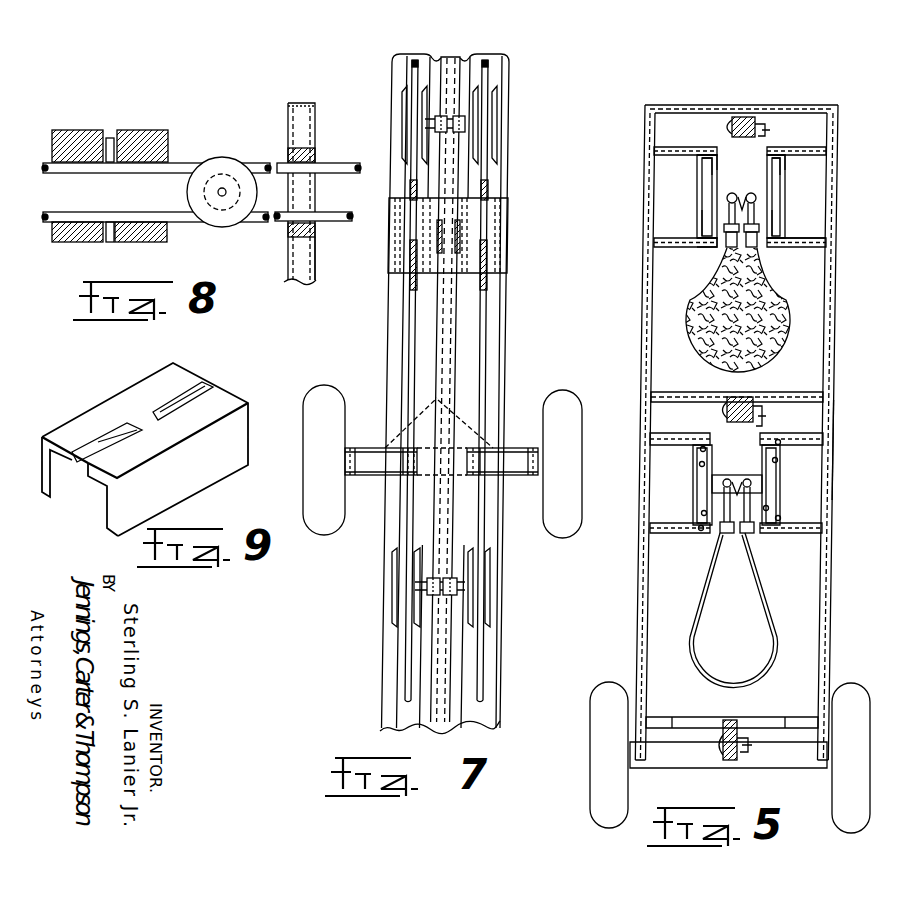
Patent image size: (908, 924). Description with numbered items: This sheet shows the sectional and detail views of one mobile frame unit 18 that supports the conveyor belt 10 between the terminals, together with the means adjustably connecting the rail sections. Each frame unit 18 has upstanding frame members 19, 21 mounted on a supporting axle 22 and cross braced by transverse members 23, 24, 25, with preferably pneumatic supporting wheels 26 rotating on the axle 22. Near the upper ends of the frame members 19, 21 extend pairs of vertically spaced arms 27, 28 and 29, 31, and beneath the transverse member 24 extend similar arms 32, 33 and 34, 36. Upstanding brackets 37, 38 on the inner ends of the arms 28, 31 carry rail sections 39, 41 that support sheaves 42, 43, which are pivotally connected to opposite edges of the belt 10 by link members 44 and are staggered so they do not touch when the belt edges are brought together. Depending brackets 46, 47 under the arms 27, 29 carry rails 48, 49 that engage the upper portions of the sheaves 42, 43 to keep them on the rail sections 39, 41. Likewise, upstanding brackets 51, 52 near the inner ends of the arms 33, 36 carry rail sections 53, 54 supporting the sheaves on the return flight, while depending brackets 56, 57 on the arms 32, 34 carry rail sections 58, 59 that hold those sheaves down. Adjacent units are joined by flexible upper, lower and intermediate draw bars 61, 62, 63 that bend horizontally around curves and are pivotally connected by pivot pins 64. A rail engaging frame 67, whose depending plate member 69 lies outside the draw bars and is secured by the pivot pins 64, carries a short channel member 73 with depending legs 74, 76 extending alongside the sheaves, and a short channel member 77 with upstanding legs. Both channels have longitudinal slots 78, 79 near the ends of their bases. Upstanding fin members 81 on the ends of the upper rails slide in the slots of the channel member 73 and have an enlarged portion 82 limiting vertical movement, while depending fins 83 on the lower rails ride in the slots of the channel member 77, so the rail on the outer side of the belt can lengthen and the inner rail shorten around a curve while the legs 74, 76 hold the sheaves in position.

In FIG. 5, the conveyor belt 10 is at (779, 294).
In FIG. 7, the mobile frame unit 18 is at (517, 446).
In FIG. 5, the mobile frame unit 18 is at (830, 453).
In FIG. 8, the upstanding frame member 19 is at (310, 283).
In FIG. 7, the upstanding frame member 19 is at (351, 477).
In FIG. 5, the upstanding frame member 19 is at (649, 370).
In FIG. 7, the upstanding frame member 21 is at (537, 478).
In FIG. 5, the upstanding frame member 21 is at (828, 364).
In FIG. 5, the supporting axle 22 is at (777, 750).
In FIG. 8, the transverse member 23 is at (312, 108).
In FIG. 5, the transverse member 23 is at (836, 110).
In FIG. 5, the transverse member 24 is at (815, 398).
In FIG. 5, the transverse member 25 is at (658, 717).
In FIG. 7, the supporting wheel 26 is at (326, 534).
In FIG. 5, the supporting wheel 26 is at (860, 702).
In FIG. 5, the arm 27 is at (663, 160).
In FIG. 8, the arm 28 is at (314, 232).
In FIG. 5, the arm 28 is at (665, 240).
In FIG. 5, the arm 29 is at (820, 152).
In FIG. 5, the arm 31 is at (810, 245).
In FIG. 5, the arm 32 is at (667, 446).
In FIG. 5, the arm 33 is at (660, 526).
In FIG. 5, the arm 34 is at (818, 434).
In FIG. 5, the arm 36 is at (808, 523).
In FIG. 8, the upstanding bracket 37 is at (312, 227).
In FIG. 5, the upstanding bracket 37 is at (697, 243).
In FIG. 5, the upstanding bracket 38 is at (813, 237).
In FIG. 8, the rail section 39 is at (43, 219).
In FIG. 5, the rail section 39 is at (706, 218).
In FIG. 5, the rail section 41 is at (780, 223).
In FIG. 8, the sheave 42 is at (245, 160).
In FIG. 5, the sheave 42 is at (707, 187).
In FIG. 5, the sheave 43 is at (782, 184).
In FIG. 5, the link member 44 is at (742, 195).
In FIG. 8, the depending bracket 46 is at (316, 152).
In FIG. 5, the depending bracket 46 is at (708, 172).
In FIG. 5, the depending bracket 47 is at (780, 172).
In FIG. 8, the rail 48 is at (45, 162).
In FIG. 5, the rail 48 is at (716, 160).
In FIG. 5, the rail 49 is at (778, 160).
In FIG. 5, the upstanding bracket 51 is at (704, 515).
In FIG. 5, the upstanding bracket 52 is at (780, 520).
In FIG. 5, the rail section 53 is at (700, 530).
In FIG. 5, the rail section 54 is at (766, 510).
In FIG. 5, the depending bracket 56 is at (703, 447).
In FIG. 5, the depending bracket 57 is at (780, 440).
In FIG. 5, the rail section 58 is at (700, 463).
In FIG. 5, the rail section 59 is at (777, 459).
In FIG. 5, the upper draw bar 61 is at (741, 117).
In FIG. 5, the lower draw bar 62 is at (732, 718).
In FIG. 5, the intermediate draw bar 63 is at (736, 398).
In FIG. 5, the pivot pin 64 is at (764, 410).
In FIG. 8, the rail engaging frame 67 is at (108, 158).
In FIG. 7, the rail engaging frame 67 is at (392, 253).
In FIG. 7, the depending plate member 69 is at (503, 233).
In FIG. 8, the short channel member 73 is at (110, 163).
In FIG. 9, the short channel member 73 is at (226, 400).
In FIG. 9, the depending leg 74 is at (58, 483).
In FIG. 9, the depending leg 76 is at (237, 445).
In FIG. 8, the short channel member 77 is at (106, 242).
In FIG. 9, the slot 78 is at (98, 443).
In FIG. 9, the slot 79 is at (200, 388).
In FIG. 8, the upstanding fin member 81 is at (150, 132).
In FIG. 7, the upstanding fin member 81 is at (408, 196).
In FIG. 8, the enlarged portion 82 is at (68, 165).
In FIG. 8, the depending fin 83 is at (162, 238).